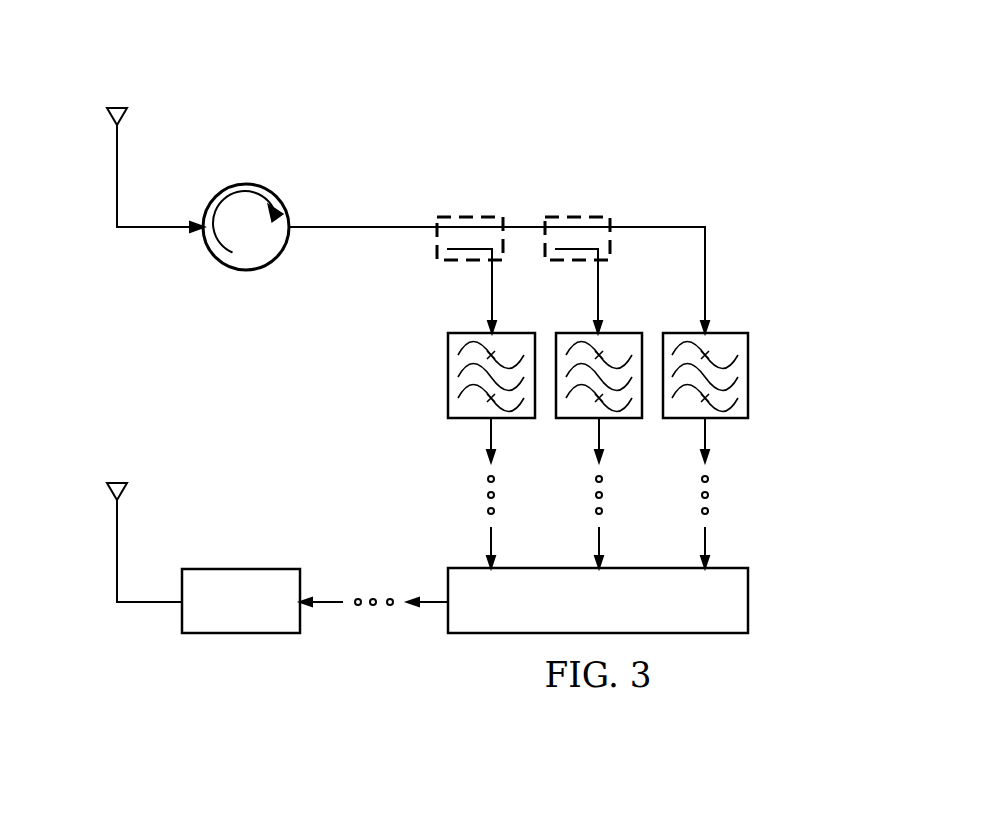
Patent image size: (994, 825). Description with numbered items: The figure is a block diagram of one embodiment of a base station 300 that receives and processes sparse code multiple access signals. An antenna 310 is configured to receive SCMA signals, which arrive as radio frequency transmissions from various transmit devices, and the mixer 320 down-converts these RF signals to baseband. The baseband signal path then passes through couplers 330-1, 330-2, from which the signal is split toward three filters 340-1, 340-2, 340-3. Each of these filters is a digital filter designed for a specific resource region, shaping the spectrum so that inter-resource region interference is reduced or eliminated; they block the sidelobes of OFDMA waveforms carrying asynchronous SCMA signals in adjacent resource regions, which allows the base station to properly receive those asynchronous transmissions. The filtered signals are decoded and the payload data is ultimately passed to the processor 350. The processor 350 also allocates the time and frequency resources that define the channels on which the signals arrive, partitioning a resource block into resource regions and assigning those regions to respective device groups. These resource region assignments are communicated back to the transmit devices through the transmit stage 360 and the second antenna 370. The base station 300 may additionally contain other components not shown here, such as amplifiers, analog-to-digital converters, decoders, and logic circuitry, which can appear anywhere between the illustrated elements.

The base station 300 is at (678, 156).
The antenna 310 is at (115, 107).
The mixer 320 is at (242, 183).
The coupler 330-1 is at (470, 215).
The coupler 330-2 is at (575, 215).
The filter 340-1 is at (523, 330).
The filter 340-2 is at (630, 330).
The filter 340-3 is at (738, 330).
The processor 350 is at (748, 612).
The transmit stage 360 is at (242, 568).
The antenna 370 is at (112, 482).